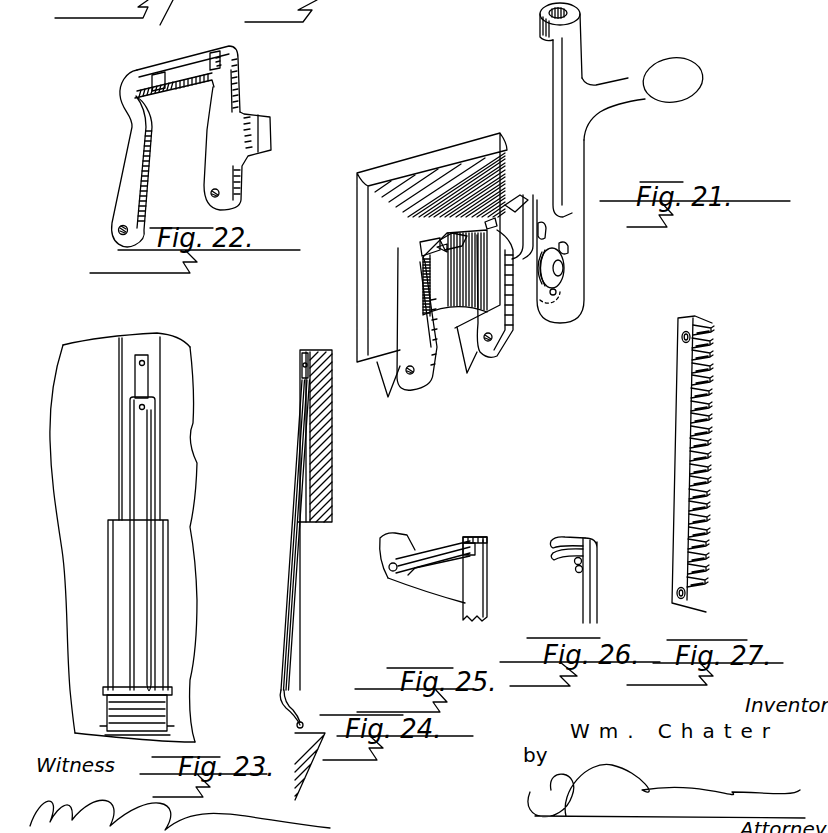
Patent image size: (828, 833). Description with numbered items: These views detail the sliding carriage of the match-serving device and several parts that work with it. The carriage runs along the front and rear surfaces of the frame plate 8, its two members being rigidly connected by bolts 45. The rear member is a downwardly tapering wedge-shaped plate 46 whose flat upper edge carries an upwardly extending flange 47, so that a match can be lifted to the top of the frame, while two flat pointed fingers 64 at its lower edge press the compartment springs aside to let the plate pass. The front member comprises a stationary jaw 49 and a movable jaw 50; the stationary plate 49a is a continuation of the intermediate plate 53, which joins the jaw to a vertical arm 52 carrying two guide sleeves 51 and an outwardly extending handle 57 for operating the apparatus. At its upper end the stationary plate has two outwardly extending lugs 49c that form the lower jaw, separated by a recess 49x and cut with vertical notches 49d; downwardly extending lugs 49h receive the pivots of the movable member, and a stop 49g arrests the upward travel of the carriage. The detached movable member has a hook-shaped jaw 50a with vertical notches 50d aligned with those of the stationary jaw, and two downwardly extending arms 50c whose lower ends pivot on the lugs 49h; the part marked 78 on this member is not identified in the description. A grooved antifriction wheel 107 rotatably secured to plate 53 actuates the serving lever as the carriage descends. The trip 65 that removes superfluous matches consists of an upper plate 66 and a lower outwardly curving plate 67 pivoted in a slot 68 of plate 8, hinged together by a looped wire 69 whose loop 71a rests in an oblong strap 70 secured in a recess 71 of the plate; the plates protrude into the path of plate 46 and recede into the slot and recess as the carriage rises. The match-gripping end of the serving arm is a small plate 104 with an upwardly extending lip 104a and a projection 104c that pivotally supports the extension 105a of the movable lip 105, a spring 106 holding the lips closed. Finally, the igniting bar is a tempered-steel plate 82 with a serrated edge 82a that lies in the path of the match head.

In FIG. 23, the plate 8 is at (123, 537).
In FIG. 24, the plate 8 is at (322, 450).
In FIG. 21, the bolts 45 is at (546, 232).
In FIG. 21, the wedge-shaped plate 46 is at (432, 247).
In FIG. 21, the flange 47 is at (413, 163).
In FIG. 21, the stationary jaw 49 is at (429, 278).
In FIG. 21, the stationary plate 49a is at (455, 280).
In FIG. 21, the outwardly-extending lugs 49c is at (433, 258).
In FIG. 21, the vertical notches 49d is at (410, 243).
In FIG. 21, the stop 49g is at (487, 225).
In FIG. 21, the downwardly-extending lugs 49h is at (410, 380).
In FIG. 21, the recess 49x is at (463, 215).
In FIG. 22, the movable jaw 50 is at (184, 146).
In FIG. 22, the hook-shaped jaw 50a is at (187, 66).
In FIG. 22, the downwardly-extending arms 50c is at (226, 97).
In FIG. 22, the vertical notches 50d is at (138, 71).
In FIG. 21, the sleeves 51 is at (540, 28).
In FIG. 21, the vertical arm 52 is at (561, 108).
In FIG. 21, the intermediate plate 53 is at (538, 275).
In FIG. 21, the handle 57 is at (627, 78).
In FIG. 21, the pointed fingers 64 is at (390, 368).
In FIG. 23, the trip 65 is at (94, 498).
In FIG. 23, the upper plate 66 is at (152, 568).
In FIG. 24, the upper plate 66 is at (305, 559).
In FIG. 23, the outwardly-curving plate 67 is at (168, 711).
In FIG. 24, the outwardly-curving plate 67 is at (298, 704).
In FIG. 23, the slot 68 is at (107, 603).
In FIG. 24, the slot 68 is at (315, 638).
In FIG. 23, the looped wire 69 is at (156, 465).
In FIG. 24, the looped wire 69 is at (298, 488).
In FIG. 23, the strap 70 is at (143, 383).
In FIG. 24, the strap 70 is at (301, 381).
In FIG. 23, the recess 71 is at (162, 425).
In FIG. 24, the recess 71 is at (316, 473).
In FIG. 23, the loop 71a is at (130, 402).
In FIG. 22, the lug 78 is at (272, 136).
In FIG. 27, the igniting-plate 82 is at (672, 464).
In FIG. 27, the serrated edge 82a is at (712, 466).
In FIG. 25, the plate 104 is at (477, 591).
In FIG. 26, the plate 104 is at (598, 567).
In FIG. 25, the lip 104a is at (477, 538).
In FIG. 26, the lip 104a is at (572, 539).
In FIG. 25, the projection 104c is at (453, 600).
In FIG. 25, the movable lip 105 is at (487, 548).
In FIG. 26, the movable lip 105 is at (570, 556).
In FIG. 25, the extension 105a is at (432, 555).
In FIG. 25, the spring 106 is at (413, 567).
In FIG. 26, the spring 106 is at (578, 573).
In FIG. 21, the antifriction-wheel 107 is at (564, 273).